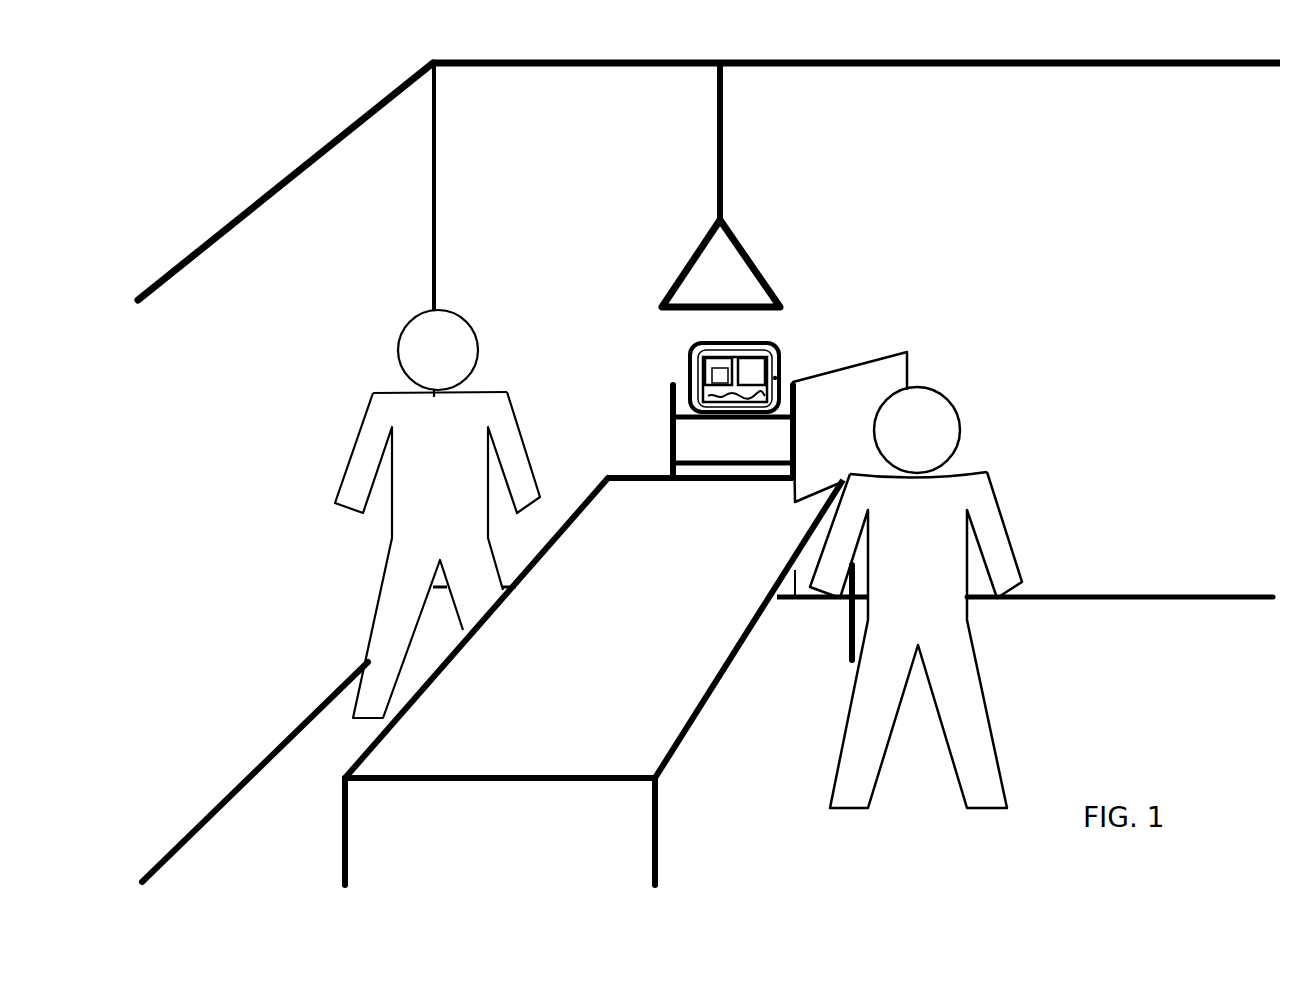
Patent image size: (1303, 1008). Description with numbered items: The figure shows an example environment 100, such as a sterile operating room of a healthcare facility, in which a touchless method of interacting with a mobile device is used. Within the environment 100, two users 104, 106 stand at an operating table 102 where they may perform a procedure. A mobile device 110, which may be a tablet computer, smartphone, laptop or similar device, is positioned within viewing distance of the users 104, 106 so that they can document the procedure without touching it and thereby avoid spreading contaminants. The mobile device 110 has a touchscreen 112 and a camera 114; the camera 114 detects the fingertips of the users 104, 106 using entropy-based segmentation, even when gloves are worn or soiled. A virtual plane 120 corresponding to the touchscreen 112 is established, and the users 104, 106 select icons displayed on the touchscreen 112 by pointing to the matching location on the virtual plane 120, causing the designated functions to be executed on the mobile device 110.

The environment 100 is at (555, 150).
The operating table 102 is at (697, 723).
The user 104 is at (422, 514).
The user 106 is at (944, 597).
The mobile device 110 is at (765, 363).
The touchscreen 112 is at (770, 374).
The camera 114 is at (711, 473).
The virtual plane 120 is at (876, 416).